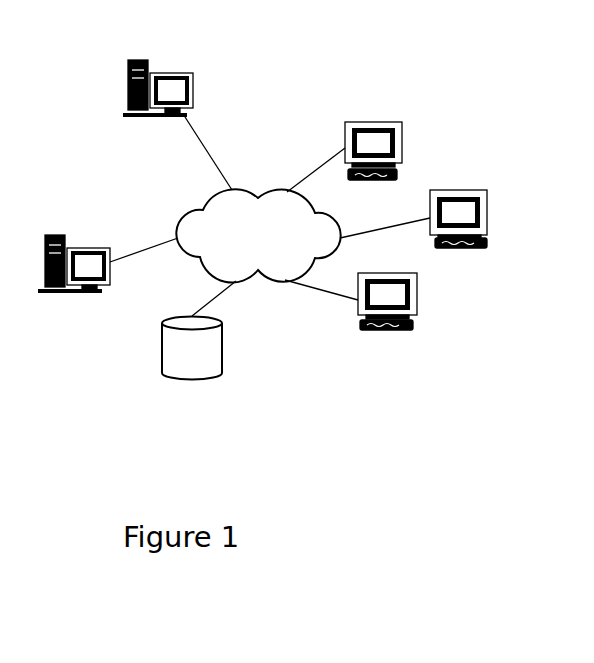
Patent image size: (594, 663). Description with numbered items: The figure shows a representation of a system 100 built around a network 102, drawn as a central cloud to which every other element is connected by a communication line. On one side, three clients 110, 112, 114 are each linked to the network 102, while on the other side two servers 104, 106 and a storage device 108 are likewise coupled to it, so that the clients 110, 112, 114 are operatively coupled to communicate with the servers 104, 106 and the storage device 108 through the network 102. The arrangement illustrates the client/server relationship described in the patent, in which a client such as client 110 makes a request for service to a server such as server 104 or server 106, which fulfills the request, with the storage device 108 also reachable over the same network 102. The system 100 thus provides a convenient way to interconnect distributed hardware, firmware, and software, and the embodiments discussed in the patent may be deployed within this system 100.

The system 100 is at (290, 203).
The network 102 is at (258, 235).
The server 104 is at (87, 248).
The server 106 is at (172, 72).
The storage device 108 is at (225, 348).
The client 110 is at (375, 123).
The client 112 is at (460, 190).
The client 114 is at (417, 300).